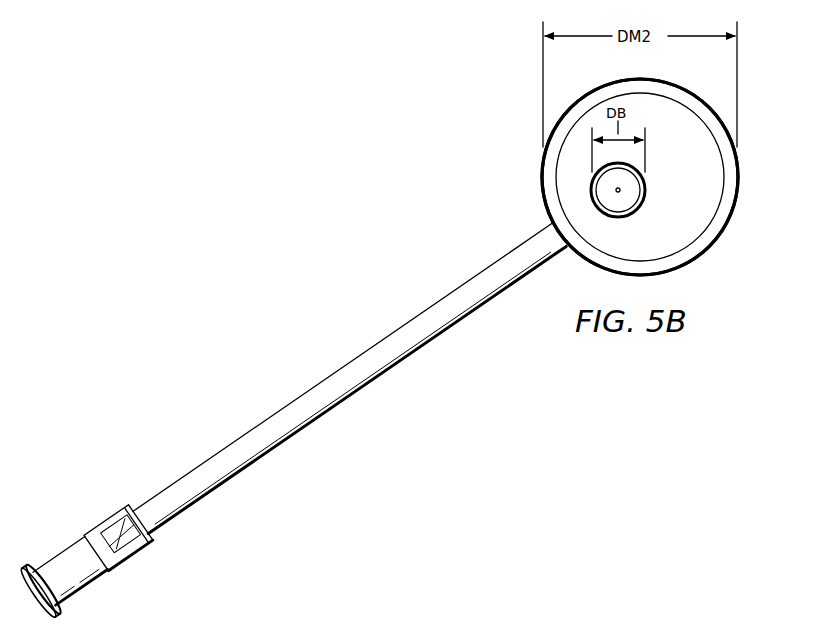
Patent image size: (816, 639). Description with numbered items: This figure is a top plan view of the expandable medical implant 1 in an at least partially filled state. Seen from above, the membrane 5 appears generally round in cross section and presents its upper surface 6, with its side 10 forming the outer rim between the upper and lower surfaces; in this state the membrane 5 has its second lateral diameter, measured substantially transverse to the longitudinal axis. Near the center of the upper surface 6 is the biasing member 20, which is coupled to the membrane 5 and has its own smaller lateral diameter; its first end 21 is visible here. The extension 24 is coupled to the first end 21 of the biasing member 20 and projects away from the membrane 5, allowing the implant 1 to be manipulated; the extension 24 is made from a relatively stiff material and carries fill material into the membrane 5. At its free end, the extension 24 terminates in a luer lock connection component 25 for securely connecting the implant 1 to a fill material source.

The expandable medical implant 1 is at (268, 108).
The membrane 5 is at (740, 177).
The upper surface 6 is at (570, 192).
The side 10 is at (542, 163).
The biasing member 20 is at (652, 187).
The first end 21 is at (625, 200).
The extension 24 is at (275, 411).
The luer lock connection component 25 is at (57, 556).